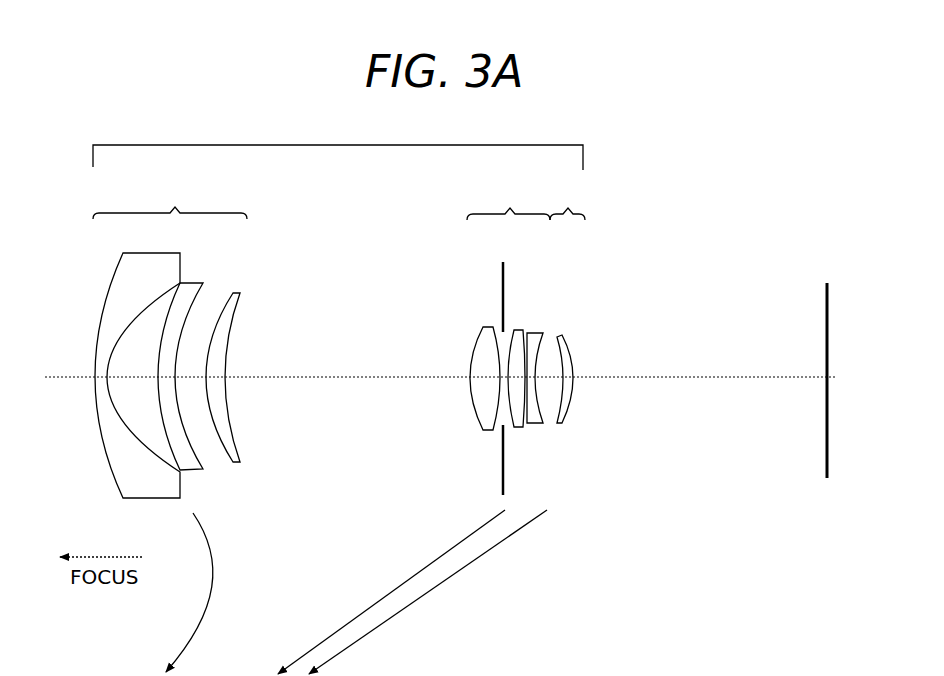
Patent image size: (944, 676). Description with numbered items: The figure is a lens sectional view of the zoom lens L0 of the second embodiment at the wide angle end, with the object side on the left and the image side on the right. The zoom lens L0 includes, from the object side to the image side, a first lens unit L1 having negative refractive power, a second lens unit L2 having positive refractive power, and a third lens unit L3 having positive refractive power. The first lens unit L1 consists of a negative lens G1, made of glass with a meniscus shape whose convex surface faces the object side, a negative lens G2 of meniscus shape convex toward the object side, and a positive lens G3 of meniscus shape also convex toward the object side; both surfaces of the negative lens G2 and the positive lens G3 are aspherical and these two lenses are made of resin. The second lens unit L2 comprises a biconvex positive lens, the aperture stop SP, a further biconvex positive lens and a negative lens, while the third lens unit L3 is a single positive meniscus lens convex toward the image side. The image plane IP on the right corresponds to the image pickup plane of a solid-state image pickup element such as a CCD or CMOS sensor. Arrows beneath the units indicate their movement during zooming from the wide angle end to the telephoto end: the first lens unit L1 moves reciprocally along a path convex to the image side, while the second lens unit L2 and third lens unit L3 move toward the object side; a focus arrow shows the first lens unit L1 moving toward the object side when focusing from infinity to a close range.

The zoom lens L0 is at (338, 144).
The first lens unit L1 is at (170, 200).
The second lens unit L2 is at (508, 202).
The third lens unit L3 is at (567, 202).
The negative lens G1 is at (123, 283).
The negative lens G2 is at (192, 287).
The positive lens G3 is at (231, 318).
The aperture stop SP is at (513, 286).
The image plane IP is at (817, 307).